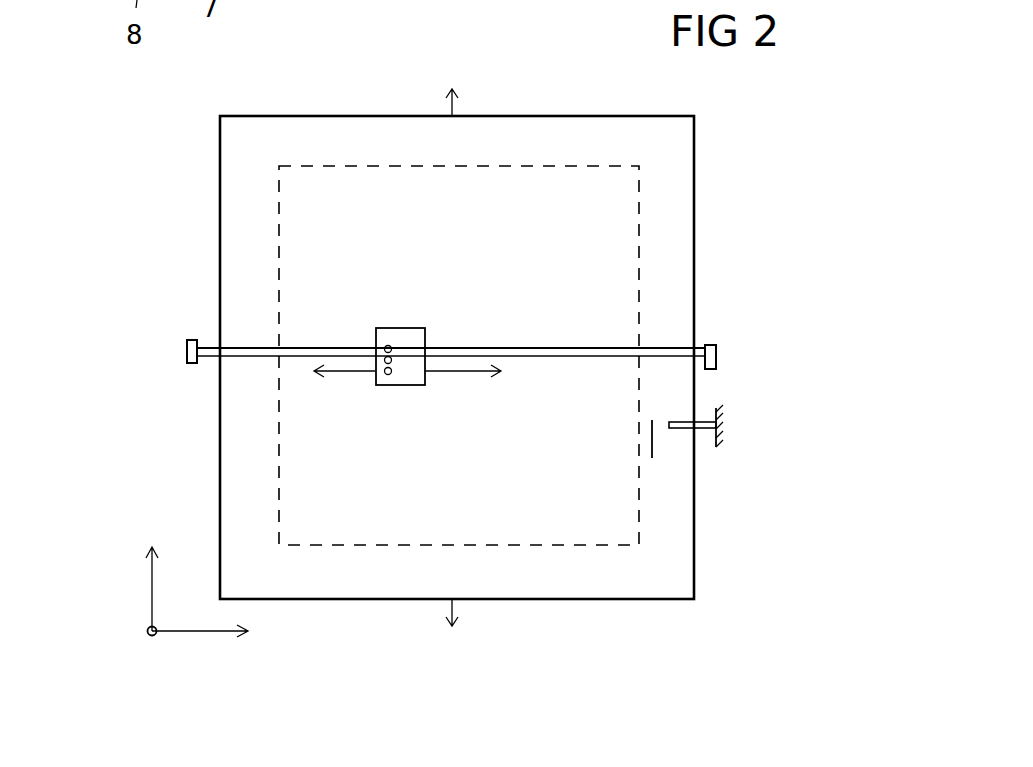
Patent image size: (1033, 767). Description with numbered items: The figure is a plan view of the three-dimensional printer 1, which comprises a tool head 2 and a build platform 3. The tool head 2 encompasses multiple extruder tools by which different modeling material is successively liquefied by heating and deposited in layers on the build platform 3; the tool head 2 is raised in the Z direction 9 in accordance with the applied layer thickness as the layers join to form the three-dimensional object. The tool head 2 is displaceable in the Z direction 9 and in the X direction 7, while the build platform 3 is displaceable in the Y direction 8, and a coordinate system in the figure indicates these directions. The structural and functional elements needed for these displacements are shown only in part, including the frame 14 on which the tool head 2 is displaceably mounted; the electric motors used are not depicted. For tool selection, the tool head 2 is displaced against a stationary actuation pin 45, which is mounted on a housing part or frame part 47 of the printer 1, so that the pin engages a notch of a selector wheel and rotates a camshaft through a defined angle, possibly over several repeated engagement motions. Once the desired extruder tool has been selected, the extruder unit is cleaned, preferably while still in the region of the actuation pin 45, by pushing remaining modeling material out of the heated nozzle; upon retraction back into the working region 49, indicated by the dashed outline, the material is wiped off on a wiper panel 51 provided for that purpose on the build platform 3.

The 3D printer 1 is at (340, 88).
The tool head 2 is at (408, 328).
The build platform 3 is at (543, 130).
The frame 14 is at (240, 352).
The working region 49 is at (670, 247).
The wiper panel 51 is at (650, 450).
The actuation pin 45 is at (683, 428).
The frame part 47 is at (722, 447).
The X direction 7 is at (205, 633).
The Y direction 8 is at (152, 591).
The Z direction 9 is at (155, 636).